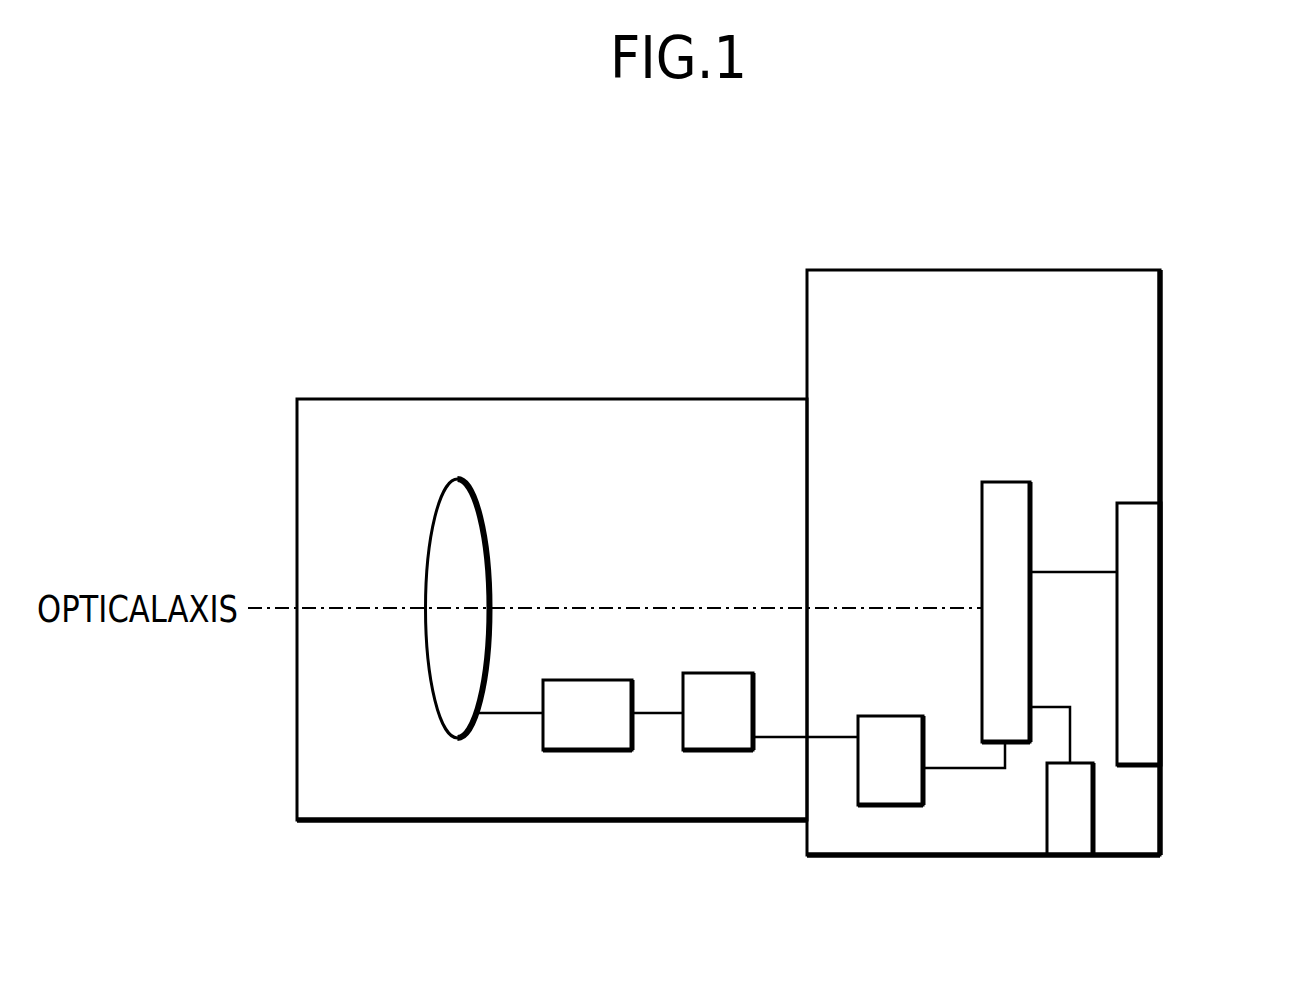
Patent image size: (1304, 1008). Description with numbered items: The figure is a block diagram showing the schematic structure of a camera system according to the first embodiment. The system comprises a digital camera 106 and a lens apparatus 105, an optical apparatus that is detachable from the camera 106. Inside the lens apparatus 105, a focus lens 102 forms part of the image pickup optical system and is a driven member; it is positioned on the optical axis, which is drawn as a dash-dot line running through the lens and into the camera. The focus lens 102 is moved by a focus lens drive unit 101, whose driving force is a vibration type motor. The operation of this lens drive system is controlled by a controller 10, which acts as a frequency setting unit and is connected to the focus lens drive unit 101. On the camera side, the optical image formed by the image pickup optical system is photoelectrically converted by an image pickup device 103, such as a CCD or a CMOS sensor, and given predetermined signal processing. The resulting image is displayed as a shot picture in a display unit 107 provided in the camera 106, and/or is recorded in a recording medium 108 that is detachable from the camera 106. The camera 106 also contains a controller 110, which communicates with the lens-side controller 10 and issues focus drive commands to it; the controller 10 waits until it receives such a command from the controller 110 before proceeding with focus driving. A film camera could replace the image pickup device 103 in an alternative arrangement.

The controller 10 is at (715, 743).
The focus lens drive unit 101 is at (588, 738).
The focus lens 102 is at (433, 664).
The image pickup device 103 is at (1007, 486).
The lens apparatus 105 is at (565, 400).
The digital camera 106 is at (990, 270).
The display unit 107 is at (1150, 542).
The recording medium 108 is at (1070, 837).
The controller 110 is at (885, 793).